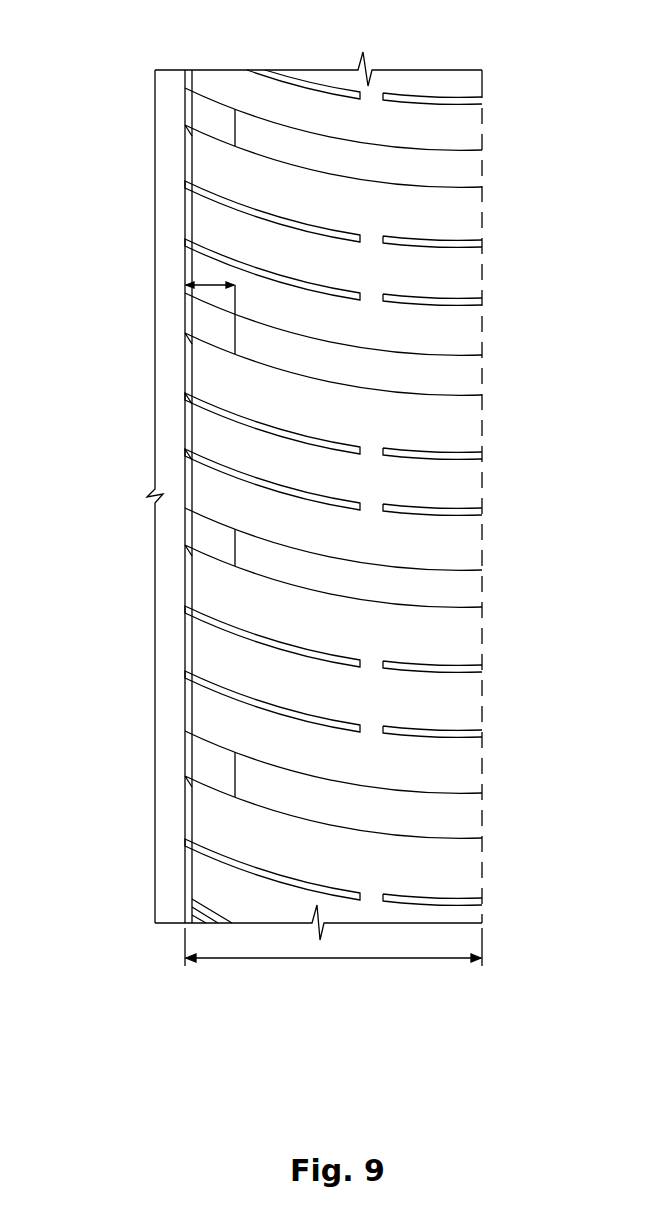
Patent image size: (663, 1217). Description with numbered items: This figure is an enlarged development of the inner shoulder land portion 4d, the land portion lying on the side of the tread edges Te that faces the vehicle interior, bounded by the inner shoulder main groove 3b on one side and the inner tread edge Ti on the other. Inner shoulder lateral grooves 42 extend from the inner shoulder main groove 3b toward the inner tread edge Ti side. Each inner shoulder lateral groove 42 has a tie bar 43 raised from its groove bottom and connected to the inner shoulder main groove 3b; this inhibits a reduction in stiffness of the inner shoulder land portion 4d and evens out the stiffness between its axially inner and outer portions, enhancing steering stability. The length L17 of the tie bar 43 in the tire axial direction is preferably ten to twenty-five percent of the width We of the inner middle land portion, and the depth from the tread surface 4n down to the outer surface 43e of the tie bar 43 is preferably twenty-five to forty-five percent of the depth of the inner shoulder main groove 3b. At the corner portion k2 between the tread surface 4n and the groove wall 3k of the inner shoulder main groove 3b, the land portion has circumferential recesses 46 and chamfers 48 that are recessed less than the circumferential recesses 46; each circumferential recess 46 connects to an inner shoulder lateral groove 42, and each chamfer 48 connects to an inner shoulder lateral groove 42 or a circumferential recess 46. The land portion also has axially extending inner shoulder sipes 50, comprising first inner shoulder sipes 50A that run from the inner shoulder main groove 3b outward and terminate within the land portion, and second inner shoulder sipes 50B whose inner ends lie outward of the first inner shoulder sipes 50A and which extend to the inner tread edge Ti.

The inner shoulder main groove 3b is at (174, 82).
The inner shoulder land portion 4d is at (364, 63).
The tread surface 4n is at (318, 103).
The tread edge Te is at (525, 469).
The inner tread edge Ti is at (483, 86).
The tie bar 43 is at (130, 453).
The outer surface of the tie bar 43e is at (217, 120).
The inner shoulder lateral groove 42 is at (323, 158).
The length of the tie bar L17 is at (210, 286).
The chamfer 48 is at (188, 422).
The circumferential recess 46 is at (192, 478).
The inner shoulder sipe 50 is at (192, 540).
The first inner shoulder sipe 50A is at (252, 643).
The second inner shoulder sipe 50B is at (433, 740).
The groove wall 3k is at (183, 812).
The corner portion k2 is at (181, 901).
The width of the inner middle land portion We is at (334, 954).